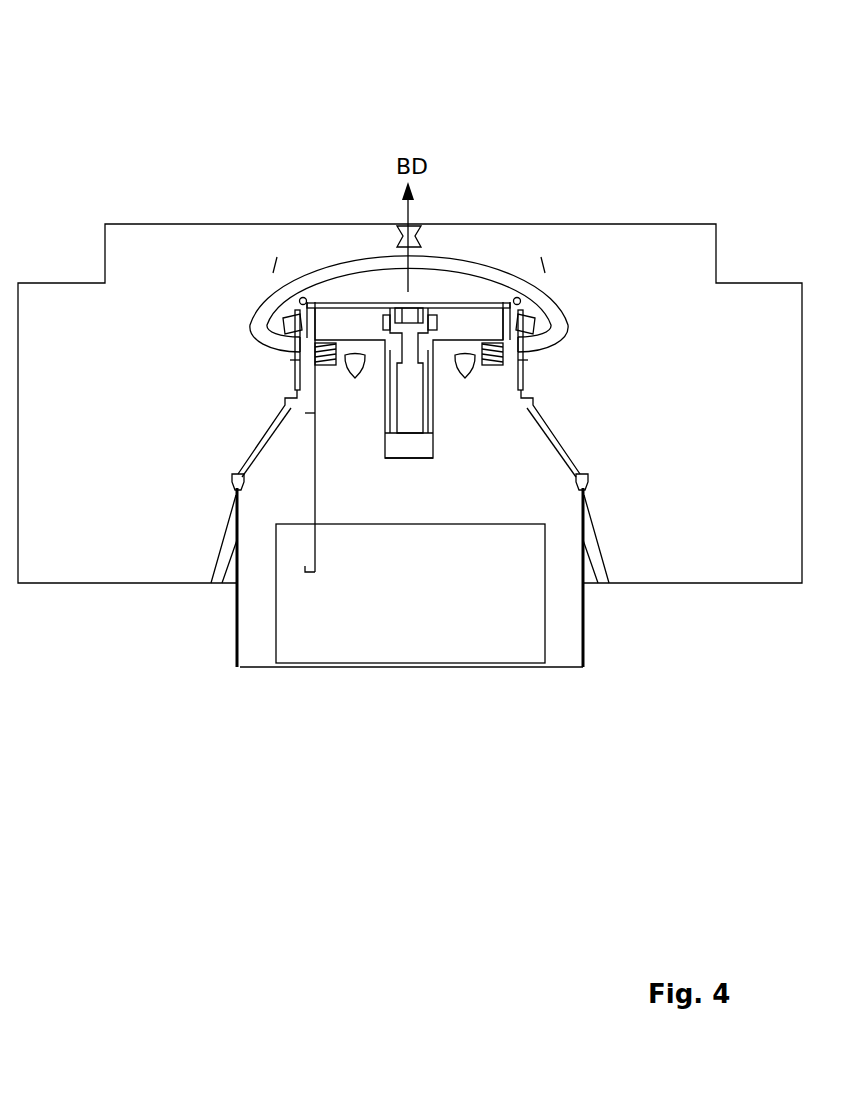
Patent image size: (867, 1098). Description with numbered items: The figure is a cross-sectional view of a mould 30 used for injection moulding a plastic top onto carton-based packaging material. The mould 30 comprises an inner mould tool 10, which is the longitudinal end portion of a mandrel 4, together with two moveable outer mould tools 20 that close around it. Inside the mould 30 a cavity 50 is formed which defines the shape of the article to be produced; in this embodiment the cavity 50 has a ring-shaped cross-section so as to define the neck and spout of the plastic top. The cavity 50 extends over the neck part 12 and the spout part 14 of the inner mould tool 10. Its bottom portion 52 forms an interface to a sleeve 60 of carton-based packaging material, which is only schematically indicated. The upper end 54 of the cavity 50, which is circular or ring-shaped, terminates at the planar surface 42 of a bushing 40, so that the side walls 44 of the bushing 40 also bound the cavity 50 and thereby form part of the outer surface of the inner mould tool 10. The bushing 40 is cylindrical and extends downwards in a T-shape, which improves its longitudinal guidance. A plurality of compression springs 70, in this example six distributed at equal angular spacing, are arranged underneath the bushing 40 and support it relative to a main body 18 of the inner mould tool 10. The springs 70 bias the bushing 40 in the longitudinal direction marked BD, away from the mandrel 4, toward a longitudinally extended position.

The mandrel 4 is at (563, 659).
The inner mould tool 10 is at (510, 433).
The neck part 12 is at (315, 458).
The spout part 14 is at (315, 392).
The main body 18 is at (494, 490).
The outer mould tool 20 is at (196, 268).
The mould 30 is at (479, 156).
The bushing 40 is at (339, 331).
The planar surface 42 is at (489, 301).
The side walls 44 is at (300, 318).
The cavity 50 is at (528, 392).
The bottom portion 52 is at (598, 497).
The upper end 54 is at (532, 301).
The sleeve 60 is at (587, 627).
The springs 70 is at (296, 355).